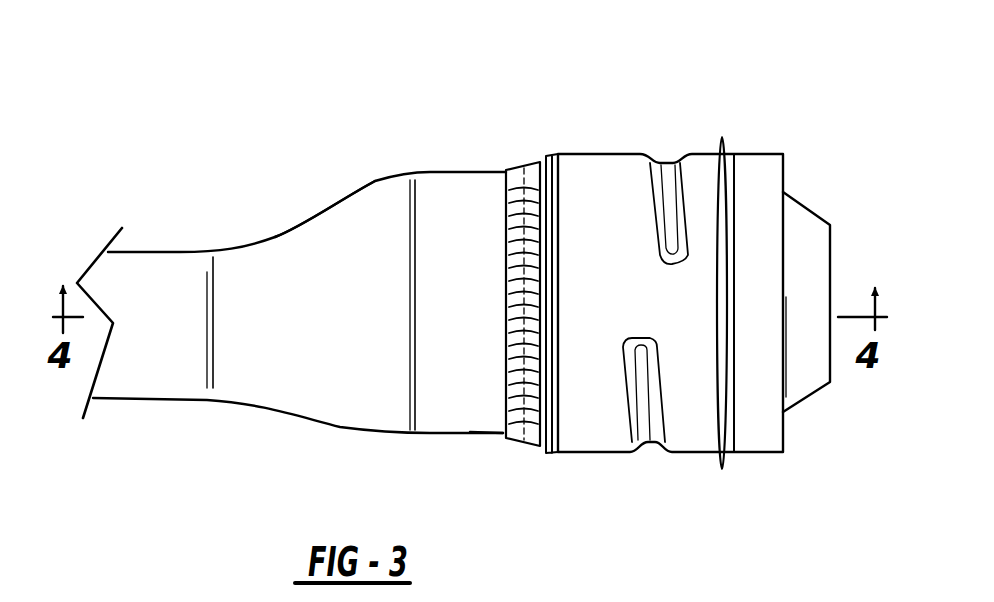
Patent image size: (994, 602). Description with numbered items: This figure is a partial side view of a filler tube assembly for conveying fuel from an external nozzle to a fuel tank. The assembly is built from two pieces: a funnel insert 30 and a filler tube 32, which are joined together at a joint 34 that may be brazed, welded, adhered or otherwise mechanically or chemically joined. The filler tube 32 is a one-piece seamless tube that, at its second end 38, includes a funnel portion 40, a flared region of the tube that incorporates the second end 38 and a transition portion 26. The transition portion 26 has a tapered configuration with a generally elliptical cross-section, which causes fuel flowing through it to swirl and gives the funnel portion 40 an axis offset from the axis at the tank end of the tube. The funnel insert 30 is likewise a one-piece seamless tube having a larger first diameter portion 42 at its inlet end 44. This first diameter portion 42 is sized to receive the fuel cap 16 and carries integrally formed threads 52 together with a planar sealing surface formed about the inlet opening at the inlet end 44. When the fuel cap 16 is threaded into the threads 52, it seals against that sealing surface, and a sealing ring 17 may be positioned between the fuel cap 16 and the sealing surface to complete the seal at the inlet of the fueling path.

The fuel cap 16 is at (792, 173).
The sealing ring 17 is at (735, 165).
The transition portion 26 is at (367, 183).
The funnel insert 30 is at (588, 151).
The filler tube 32 is at (328, 204).
The joint 34 is at (523, 160).
The second end 38 is at (490, 435).
The funnel portion 40 is at (357, 350).
The first diameter portion 42 is at (693, 430).
The inlet end 44 is at (738, 164).
The threads 52 is at (640, 164).